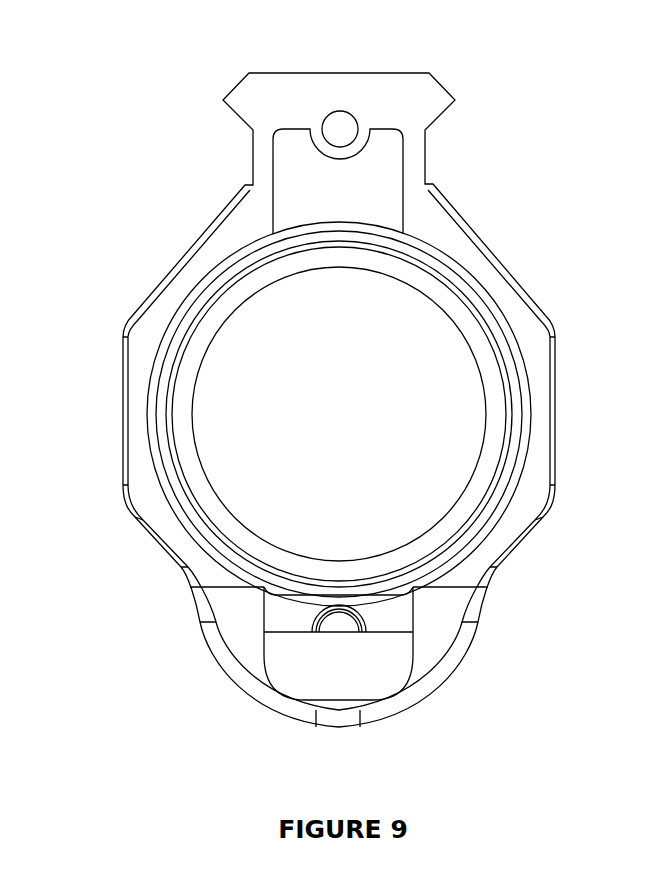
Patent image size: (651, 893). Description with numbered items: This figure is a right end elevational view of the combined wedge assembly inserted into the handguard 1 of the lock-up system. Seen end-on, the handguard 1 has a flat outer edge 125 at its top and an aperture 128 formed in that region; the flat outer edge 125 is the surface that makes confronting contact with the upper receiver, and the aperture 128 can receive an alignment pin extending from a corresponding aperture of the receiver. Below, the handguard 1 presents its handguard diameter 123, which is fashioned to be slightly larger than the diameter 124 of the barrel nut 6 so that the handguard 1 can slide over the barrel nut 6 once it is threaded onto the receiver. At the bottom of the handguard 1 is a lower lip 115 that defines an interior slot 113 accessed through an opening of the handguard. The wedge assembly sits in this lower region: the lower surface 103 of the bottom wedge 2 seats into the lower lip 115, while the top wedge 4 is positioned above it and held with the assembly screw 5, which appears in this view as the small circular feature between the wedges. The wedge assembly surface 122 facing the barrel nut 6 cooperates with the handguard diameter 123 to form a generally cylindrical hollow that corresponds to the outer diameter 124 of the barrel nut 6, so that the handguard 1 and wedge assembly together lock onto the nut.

The handguard 1 is at (258, 100).
The bottom wedge 2 is at (306, 652).
The top wedge 4 is at (311, 610).
The assembly screw 5 is at (342, 617).
The barrel nut 6 is at (160, 400).
The lower surface 103 is at (403, 680).
The interior slot 113 is at (390, 656).
The lower lip 115 is at (418, 670).
The wedge assembly surface 122 is at (346, 600).
The handguard diameter 123 is at (205, 283).
The diameter of the barrel nut 124 is at (320, 221).
The flat outer edge 125 is at (290, 118).
The aperture 128 is at (342, 128).